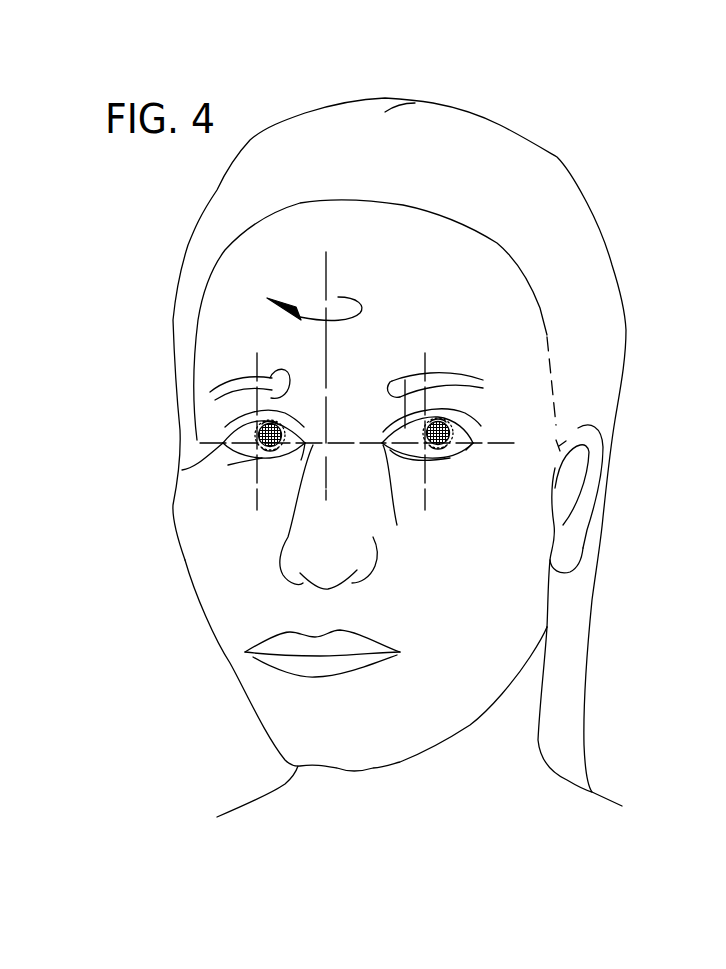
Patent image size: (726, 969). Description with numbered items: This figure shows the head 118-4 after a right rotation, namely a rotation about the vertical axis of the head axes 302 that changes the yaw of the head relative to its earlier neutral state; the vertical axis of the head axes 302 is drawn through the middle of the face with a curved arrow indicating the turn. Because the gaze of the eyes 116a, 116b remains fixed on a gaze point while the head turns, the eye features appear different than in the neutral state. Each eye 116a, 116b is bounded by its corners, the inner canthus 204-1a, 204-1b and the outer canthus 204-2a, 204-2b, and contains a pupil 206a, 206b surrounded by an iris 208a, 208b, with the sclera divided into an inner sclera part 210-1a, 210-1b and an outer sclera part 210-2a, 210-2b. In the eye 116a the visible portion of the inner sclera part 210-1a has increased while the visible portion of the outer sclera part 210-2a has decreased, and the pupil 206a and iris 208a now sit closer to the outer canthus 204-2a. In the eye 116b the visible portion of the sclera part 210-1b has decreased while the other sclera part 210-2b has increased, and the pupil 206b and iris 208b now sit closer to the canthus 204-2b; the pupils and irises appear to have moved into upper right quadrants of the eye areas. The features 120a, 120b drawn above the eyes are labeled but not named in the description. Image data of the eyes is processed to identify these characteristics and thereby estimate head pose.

The head 118-4 is at (612, 152).
The head axes 302 is at (327, 272).
The left eyebrow 120b is at (197, 380).
The right eyebrow 120a is at (500, 378).
The eye 116b is at (194, 415).
The eye 116a is at (502, 415).
The pupil 206b is at (271, 422).
The pupil 206a is at (441, 420).
The iris 208b is at (277, 452).
The iris 208a is at (443, 448).
The inner canthus 204-1b is at (306, 440).
The canthus 204-2b is at (182, 470).
The inner canthus 204-1a is at (397, 525).
The outer canthus 204-2a is at (473, 443).
The inner sclera part 210-1b is at (326, 500).
The outer sclera part 210-2b is at (237, 468).
The inner sclera part 210-1a is at (405, 380).
The outer sclera part 210-2a is at (467, 452).